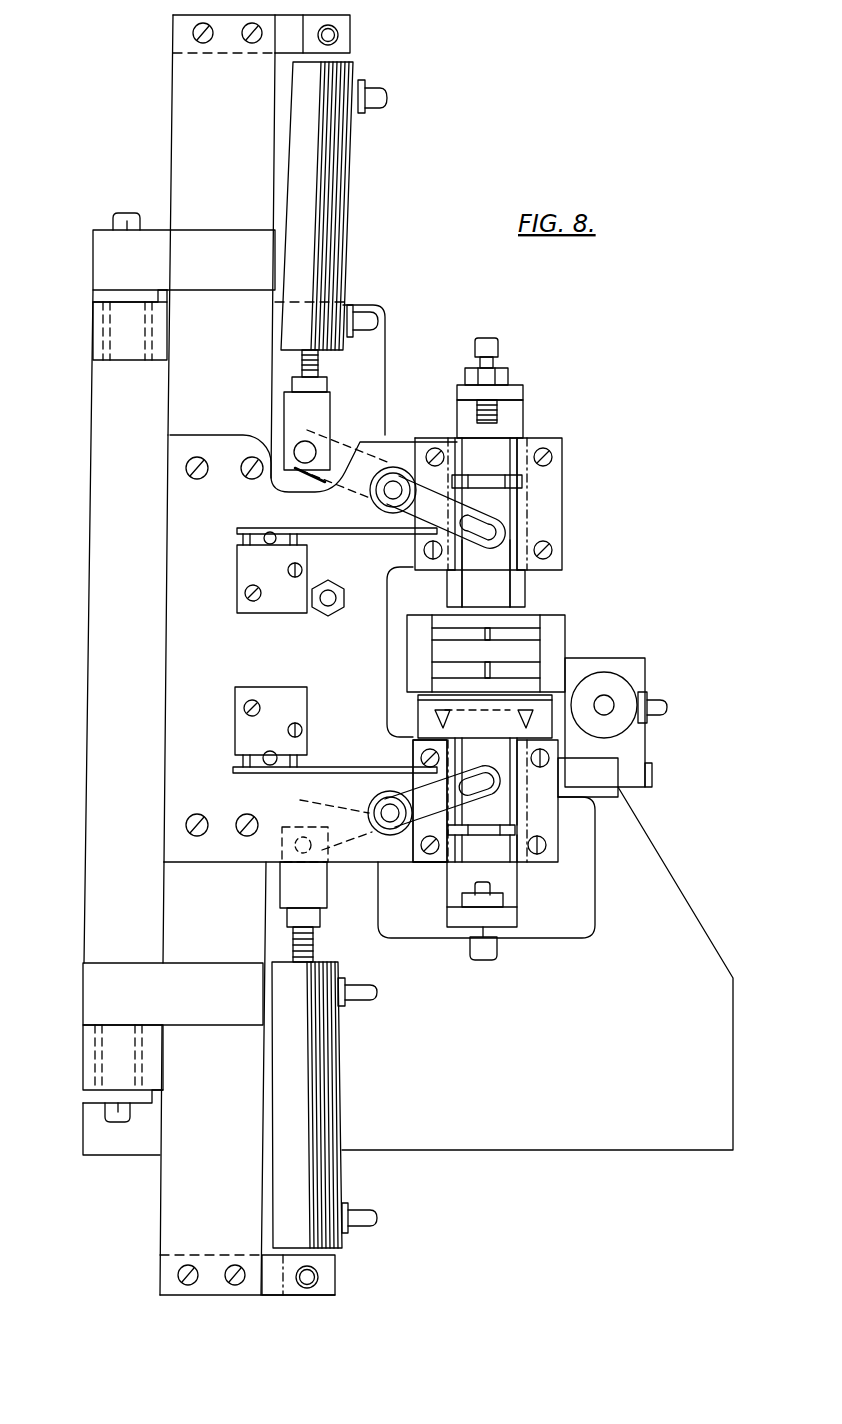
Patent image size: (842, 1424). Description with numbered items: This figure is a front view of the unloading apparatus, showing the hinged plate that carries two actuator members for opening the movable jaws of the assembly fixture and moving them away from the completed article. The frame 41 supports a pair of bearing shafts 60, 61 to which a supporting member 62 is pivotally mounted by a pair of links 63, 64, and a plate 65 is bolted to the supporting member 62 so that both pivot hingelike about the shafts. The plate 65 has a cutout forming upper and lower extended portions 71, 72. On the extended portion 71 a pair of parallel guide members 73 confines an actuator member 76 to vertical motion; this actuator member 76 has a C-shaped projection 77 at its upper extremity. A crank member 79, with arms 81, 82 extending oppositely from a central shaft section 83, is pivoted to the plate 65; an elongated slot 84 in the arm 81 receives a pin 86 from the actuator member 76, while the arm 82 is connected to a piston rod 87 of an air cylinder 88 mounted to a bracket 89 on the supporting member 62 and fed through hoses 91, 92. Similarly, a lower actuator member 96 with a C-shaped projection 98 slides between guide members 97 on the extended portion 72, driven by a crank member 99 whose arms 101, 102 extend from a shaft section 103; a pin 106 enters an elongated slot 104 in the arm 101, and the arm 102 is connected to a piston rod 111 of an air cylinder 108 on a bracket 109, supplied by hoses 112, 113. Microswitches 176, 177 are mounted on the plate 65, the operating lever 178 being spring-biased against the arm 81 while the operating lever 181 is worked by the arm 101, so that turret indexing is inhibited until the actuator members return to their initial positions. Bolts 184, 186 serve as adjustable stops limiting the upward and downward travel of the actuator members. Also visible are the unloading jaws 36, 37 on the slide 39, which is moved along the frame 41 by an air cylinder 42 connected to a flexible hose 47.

The unloading jaw 36 is at (553, 638).
The unloading jaw 37 is at (412, 645).
The slide 39 is at (417, 705).
The frame 41 is at (683, 915).
The air cylinder 42 is at (607, 682).
The flexible hose 47 is at (657, 700).
The bearing shaft 60 is at (120, 325).
The bearing shaft 61 is at (100, 1045).
The supporting member 62 is at (185, 112).
The link 63 is at (100, 255).
The link 64 is at (95, 1000).
The plate 65 is at (183, 520).
The extended portion 71 is at (573, 483).
The extended portion 72 is at (570, 833).
The guide member 73 is at (555, 447).
The actuator member 76 is at (503, 592).
The C-shaped projection 77 is at (517, 480).
The crank member 79 is at (357, 503).
The arm 81 is at (423, 512).
The arm 82 is at (335, 453).
The central shaft section 83 is at (488, 470).
The elongated slot 84 is at (486, 573).
The pin 86 is at (508, 523).
The piston rod 87 is at (320, 365).
The air cylinder 88 is at (343, 178).
The bracket 89 is at (347, 22).
The flexible hose 91 is at (382, 90).
The flexible hose 92 is at (362, 317).
The actuator member 96 is at (507, 720).
The guide member 97 is at (423, 857).
The C-shaped projection 98 is at (520, 832).
The crank member 99 is at (375, 783).
The arm 101 is at (427, 787).
The arm 102 is at (385, 789).
The shaft section 103 is at (387, 820).
The elongated slot 104 is at (486, 761).
The pin 106 is at (517, 830).
The air cylinder 108 is at (327, 1072).
The bracket 109 is at (328, 1270).
The piston rod 111 is at (313, 935).
The flexible hose 112 is at (358, 1215).
The flexible hose 113 is at (360, 987).
The microswitch 176 is at (240, 570).
The microswitch 177 is at (263, 690).
The operating lever 178 is at (327, 540).
The operating lever 181 is at (317, 768).
The bolt 184 is at (498, 348).
The bolt 186 is at (490, 945).